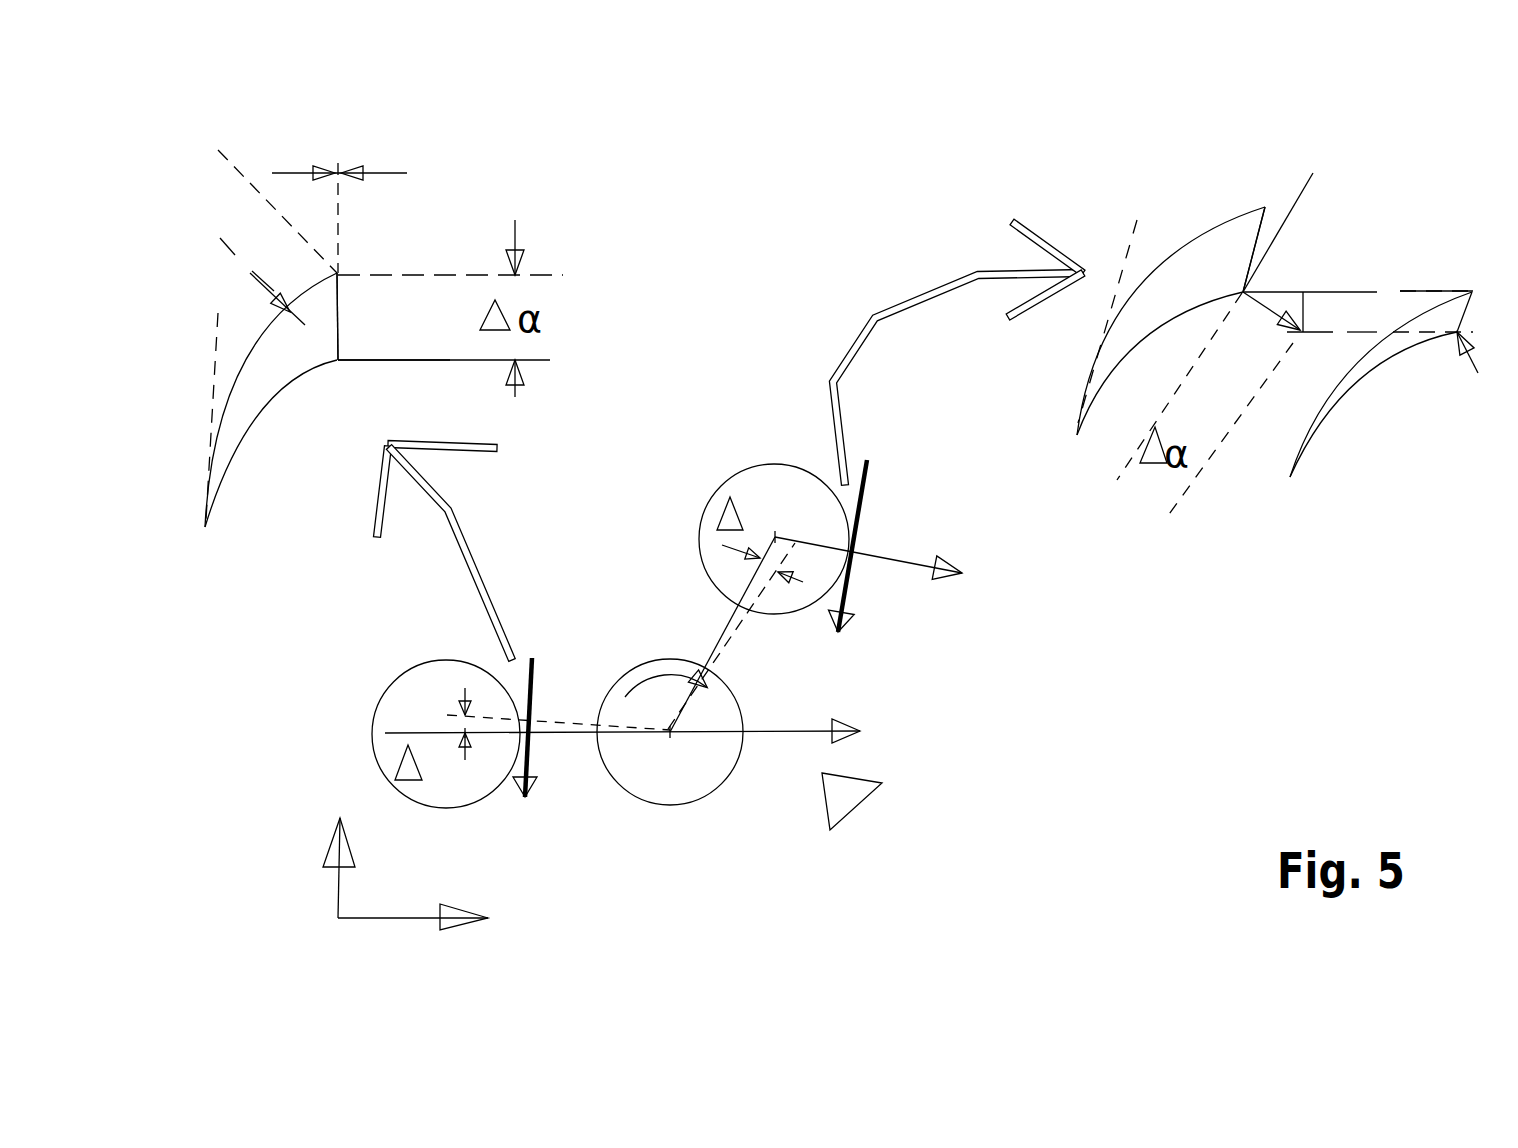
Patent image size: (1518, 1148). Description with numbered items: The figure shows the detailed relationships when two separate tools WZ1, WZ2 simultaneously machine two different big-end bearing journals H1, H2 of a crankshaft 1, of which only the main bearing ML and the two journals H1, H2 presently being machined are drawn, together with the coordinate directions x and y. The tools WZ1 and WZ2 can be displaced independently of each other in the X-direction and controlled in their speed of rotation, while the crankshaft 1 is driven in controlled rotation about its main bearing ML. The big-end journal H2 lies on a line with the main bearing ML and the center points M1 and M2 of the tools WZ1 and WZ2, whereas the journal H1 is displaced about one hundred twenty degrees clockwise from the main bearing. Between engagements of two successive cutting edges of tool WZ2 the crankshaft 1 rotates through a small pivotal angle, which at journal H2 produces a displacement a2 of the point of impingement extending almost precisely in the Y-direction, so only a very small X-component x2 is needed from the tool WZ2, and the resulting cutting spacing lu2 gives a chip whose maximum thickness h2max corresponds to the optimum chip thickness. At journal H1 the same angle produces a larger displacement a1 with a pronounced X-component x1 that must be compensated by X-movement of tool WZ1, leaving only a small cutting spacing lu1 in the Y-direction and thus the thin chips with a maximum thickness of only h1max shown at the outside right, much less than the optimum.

The crankshaft 1 is at (822, 773).
The first tool WZ1 is at (867, 472).
The second tool WZ2 is at (590, 612).
The big-end bearing journal H1 is at (728, 477).
The big-end bearing journal H2 is at (370, 733).
The main bearing ML is at (696, 694).
The center point of tool WZ1 M1 is at (905, 579).
The center point of tool WZ2 M2 is at (664, 739).
The X-component of displacement a1 x1 is at (1295, 211).
The X-component of displacement a2 x2 is at (363, 176).
The displacement at machining location on H1 a1 is at (1278, 303).
The displacement of point of impingement on H2 a2 is at (340, 290).
The maximum chip thickness at H1 h1max is at (1442, 300).
The maximum chip thickness at H2 h2max is at (323, 343).
The cutting spacing at H1 lu1 is at (1315, 311).
The cutting spacing at H2 lu2 is at (233, 251).
The X-direction x is at (418, 902).
The Y-direction y is at (319, 862).